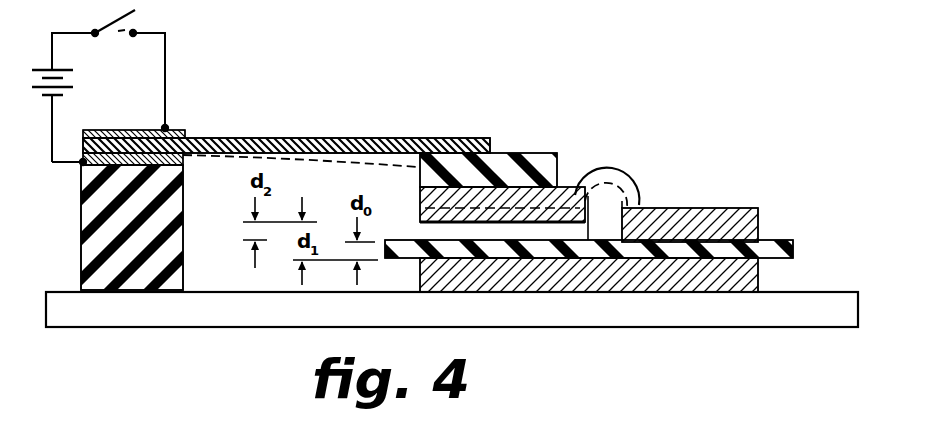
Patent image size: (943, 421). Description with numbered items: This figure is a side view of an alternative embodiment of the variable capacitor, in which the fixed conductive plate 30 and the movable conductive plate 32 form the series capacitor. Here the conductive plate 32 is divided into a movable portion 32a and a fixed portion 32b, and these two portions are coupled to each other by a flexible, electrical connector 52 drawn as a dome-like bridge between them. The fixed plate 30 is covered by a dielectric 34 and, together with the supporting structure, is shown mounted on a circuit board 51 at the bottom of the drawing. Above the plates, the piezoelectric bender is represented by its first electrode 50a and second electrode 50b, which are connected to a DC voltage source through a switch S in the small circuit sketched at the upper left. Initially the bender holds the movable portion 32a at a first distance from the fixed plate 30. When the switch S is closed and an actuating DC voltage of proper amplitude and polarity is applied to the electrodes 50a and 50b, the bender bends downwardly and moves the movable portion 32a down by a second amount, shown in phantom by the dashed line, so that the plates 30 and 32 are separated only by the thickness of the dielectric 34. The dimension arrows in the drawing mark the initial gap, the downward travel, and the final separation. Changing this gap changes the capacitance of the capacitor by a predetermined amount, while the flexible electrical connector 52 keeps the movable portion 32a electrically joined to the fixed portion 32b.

The switch S is at (137, 16).
The fixed conductive plate 30 is at (760, 275).
The movable conductive plate 32 is at (740, 150).
The movable portion 32a is at (565, 185).
The fixed portion 32b is at (680, 207).
The dielectric 34 is at (793, 248).
The first electrode 50a is at (188, 133).
The second electrode 50b is at (190, 168).
The circuit board 51 is at (752, 320).
The flexible electrical connector 52 is at (612, 168).